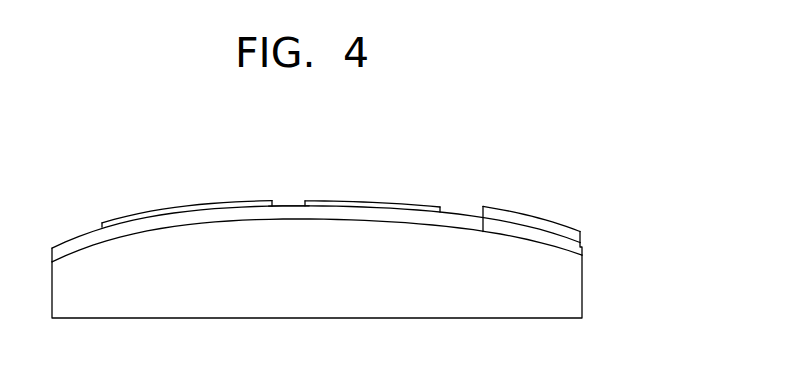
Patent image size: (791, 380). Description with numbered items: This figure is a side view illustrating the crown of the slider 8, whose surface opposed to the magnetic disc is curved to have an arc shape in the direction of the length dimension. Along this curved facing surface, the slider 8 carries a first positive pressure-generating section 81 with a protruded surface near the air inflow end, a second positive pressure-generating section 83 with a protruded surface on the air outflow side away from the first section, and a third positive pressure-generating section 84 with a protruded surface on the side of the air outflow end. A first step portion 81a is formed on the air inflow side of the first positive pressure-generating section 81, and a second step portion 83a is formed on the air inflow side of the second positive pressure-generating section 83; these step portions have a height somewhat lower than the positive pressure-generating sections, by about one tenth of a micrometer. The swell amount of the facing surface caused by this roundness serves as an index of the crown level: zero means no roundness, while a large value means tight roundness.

The slider 8 is at (622, 211).
The first positive pressure-generating section 81 is at (183, 203).
The first step portion 81a is at (79, 233).
The second positive pressure-generating section 83 is at (360, 200).
The second step portion 83a is at (286, 205).
The third positive pressure-generating section 84 is at (520, 211).